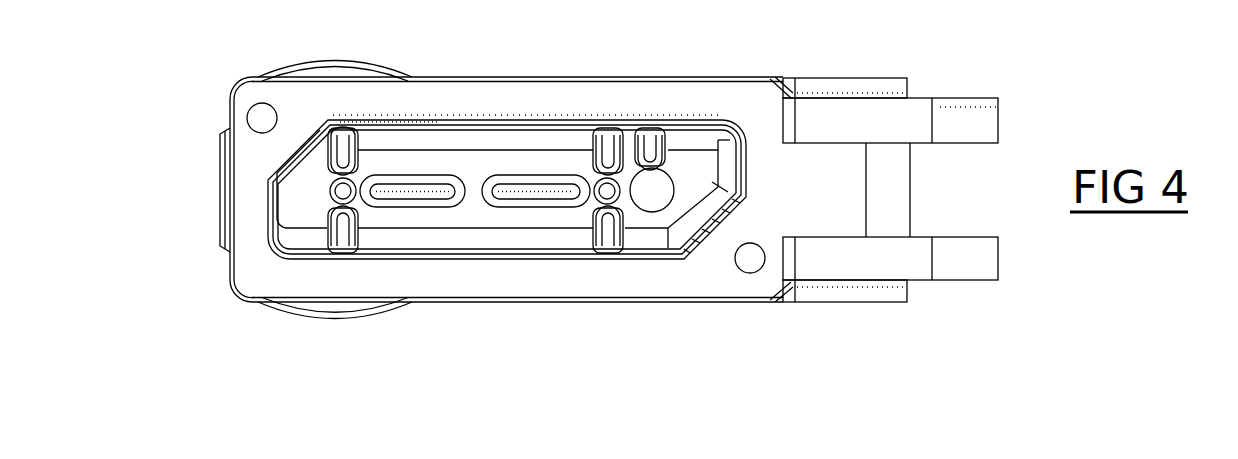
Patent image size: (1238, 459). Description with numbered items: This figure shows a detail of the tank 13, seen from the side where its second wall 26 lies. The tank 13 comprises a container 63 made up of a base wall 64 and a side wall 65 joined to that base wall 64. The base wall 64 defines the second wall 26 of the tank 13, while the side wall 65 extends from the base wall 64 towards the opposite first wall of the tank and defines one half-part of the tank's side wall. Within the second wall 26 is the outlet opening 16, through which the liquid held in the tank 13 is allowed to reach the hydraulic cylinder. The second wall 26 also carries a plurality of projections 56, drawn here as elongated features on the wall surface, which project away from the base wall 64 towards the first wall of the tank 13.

The tank 13 is at (705, 72).
The outlet opening 16 is at (608, 191).
The second wall 26 is at (312, 205).
The projections 56 is at (397, 197).
The container 63 is at (493, 157).
The base wall 64 is at (567, 163).
The side wall 65 is at (388, 127).